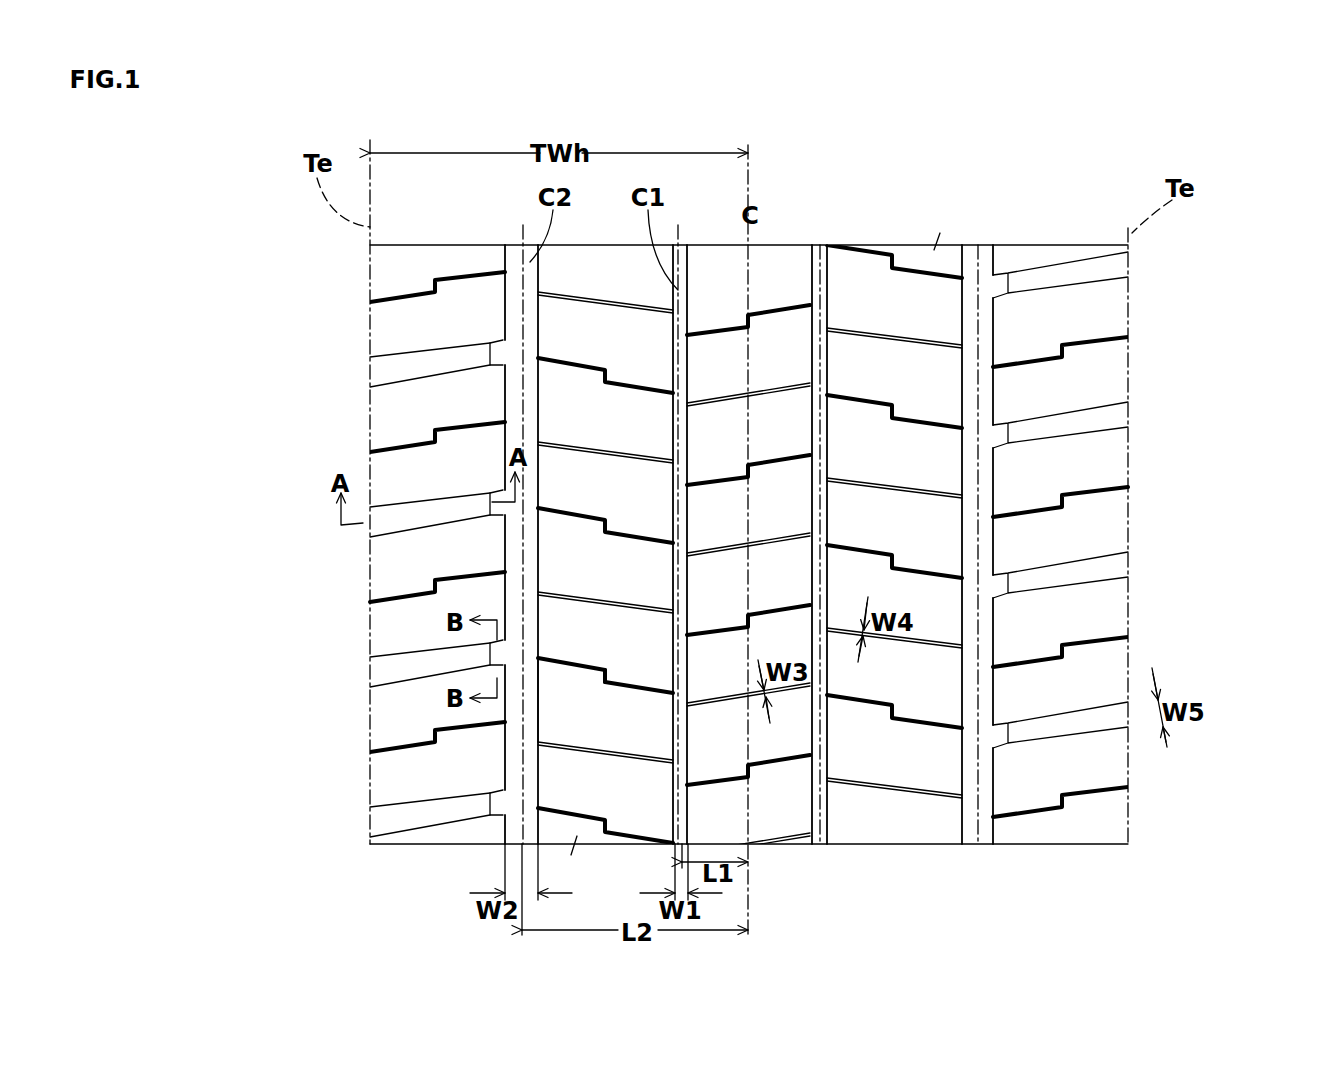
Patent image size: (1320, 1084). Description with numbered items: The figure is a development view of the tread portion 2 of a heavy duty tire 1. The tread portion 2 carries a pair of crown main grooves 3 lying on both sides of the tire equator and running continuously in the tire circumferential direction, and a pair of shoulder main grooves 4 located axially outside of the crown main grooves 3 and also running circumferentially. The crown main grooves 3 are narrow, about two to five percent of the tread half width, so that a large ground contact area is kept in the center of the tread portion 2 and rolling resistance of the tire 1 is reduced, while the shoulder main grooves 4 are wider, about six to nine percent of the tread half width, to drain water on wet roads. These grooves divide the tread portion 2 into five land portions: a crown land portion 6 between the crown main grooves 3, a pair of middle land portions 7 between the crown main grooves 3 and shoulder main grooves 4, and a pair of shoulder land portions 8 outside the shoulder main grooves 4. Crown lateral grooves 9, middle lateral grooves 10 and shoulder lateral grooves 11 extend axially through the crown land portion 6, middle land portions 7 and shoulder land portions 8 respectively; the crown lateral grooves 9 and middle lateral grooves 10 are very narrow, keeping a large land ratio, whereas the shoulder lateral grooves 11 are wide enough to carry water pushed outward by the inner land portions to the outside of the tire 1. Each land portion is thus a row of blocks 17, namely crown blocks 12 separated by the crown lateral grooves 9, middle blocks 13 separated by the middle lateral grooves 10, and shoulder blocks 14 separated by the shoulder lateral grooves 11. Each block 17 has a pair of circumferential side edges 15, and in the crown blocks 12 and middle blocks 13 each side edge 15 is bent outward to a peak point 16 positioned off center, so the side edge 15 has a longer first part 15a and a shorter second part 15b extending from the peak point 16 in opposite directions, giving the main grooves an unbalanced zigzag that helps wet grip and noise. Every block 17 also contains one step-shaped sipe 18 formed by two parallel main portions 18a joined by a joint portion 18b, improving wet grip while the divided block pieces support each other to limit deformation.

The heavy duty tire 1 is at (1205, 218).
The tread portion 2 is at (1087, 243).
The crown main groove 3 is at (681, 268).
The shoulder main groove 4 is at (516, 275).
The crown land portion 6 is at (763, 507).
The middle land portion 7 is at (720, 542).
The shoulder land portion 8 is at (703, 498).
The crown lateral groove 9 is at (733, 393).
The middle lateral groove 10 is at (624, 757).
The shoulder lateral groove 11 is at (420, 664).
The crown block 12 is at (770, 512).
The middle block 13 is at (920, 553).
The shoulder block 14 is at (1078, 613).
The side edge 15 is at (432, 588).
The first part 15a is at (670, 497).
The second part 15b is at (672, 405).
The peak point 16 is at (670, 457).
The block 17 is at (1213, 440).
The sipe 18 is at (640, 791).
The main portion 18a is at (575, 668).
The joint portion 18b is at (598, 688).